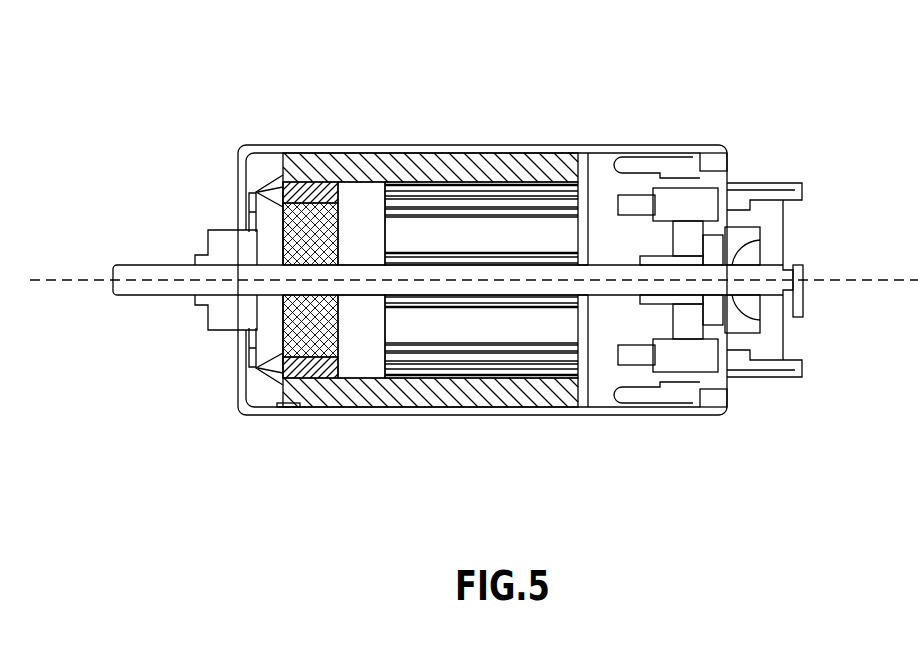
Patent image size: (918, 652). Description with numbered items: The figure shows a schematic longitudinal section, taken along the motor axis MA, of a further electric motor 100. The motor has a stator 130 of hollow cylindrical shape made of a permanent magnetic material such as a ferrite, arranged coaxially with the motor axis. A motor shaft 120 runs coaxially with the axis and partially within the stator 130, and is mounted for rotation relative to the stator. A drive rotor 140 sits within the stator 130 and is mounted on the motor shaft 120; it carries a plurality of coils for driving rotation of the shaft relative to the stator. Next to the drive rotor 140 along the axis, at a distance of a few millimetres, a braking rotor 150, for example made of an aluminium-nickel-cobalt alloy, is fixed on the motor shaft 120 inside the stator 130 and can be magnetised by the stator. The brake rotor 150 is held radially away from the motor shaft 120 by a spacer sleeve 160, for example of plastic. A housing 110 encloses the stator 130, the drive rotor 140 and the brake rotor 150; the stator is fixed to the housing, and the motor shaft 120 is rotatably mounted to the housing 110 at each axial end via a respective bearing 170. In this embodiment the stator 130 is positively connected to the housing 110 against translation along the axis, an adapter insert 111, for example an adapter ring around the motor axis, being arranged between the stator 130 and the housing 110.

The electric motor 100 is at (474, 286).
The housing 110 is at (487, 342).
The adapter insert 111 is at (242, 362).
The motor shaft 120 is at (440, 237).
The stator 130 is at (389, 218).
The drive rotor 140 is at (652, 239).
The braking rotor 150 is at (338, 417).
The spacer sleeve 160 is at (343, 148).
The bearing 170 is at (494, 262).